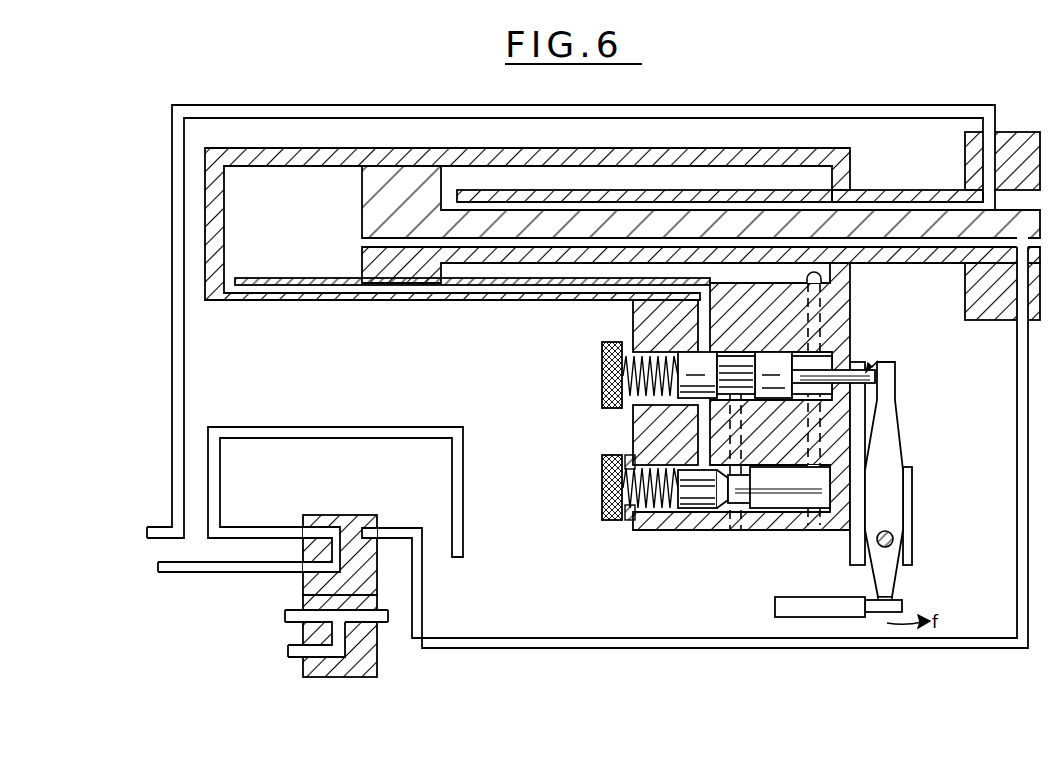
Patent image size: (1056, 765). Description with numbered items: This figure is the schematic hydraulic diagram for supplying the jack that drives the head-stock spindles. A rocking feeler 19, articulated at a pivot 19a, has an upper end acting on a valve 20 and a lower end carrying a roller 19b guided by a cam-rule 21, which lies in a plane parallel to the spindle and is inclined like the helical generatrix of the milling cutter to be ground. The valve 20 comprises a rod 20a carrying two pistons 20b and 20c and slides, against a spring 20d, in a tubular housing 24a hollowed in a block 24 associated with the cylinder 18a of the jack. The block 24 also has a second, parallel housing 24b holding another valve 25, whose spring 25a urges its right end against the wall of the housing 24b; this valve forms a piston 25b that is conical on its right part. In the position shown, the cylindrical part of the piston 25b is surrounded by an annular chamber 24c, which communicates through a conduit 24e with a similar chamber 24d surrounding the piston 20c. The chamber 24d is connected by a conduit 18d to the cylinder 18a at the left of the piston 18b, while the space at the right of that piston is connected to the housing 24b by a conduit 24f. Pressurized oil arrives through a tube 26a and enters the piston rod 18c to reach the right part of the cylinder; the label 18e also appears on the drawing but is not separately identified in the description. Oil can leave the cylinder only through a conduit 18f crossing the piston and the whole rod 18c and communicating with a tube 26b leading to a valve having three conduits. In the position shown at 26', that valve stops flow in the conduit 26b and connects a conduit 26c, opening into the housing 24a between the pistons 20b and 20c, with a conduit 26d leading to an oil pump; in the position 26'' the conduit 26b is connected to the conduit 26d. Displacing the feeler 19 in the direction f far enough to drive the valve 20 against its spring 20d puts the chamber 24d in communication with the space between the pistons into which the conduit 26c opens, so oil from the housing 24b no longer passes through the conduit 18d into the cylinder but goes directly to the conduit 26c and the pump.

The cylinder 18a is at (293, 158).
The piston 18b is at (405, 178).
The piston rod 18c is at (765, 198).
The conduit 18d is at (400, 287).
The housing right inner bar 18e is at (902, 206).
The conduit 18f is at (930, 247).
The rocking feeler 19 is at (888, 472).
The articulation 19a is at (893, 539).
The roller 19b is at (897, 608).
The valve 20 is at (895, 368).
The rod 20a is at (815, 377).
The piston 20b is at (783, 360).
The piston 20c is at (670, 392).
The spring 20d is at (602, 356).
The cam-rule 21 is at (810, 612).
The block 24 is at (652, 327).
The tubular housing 24a is at (858, 400).
The second housing 24b is at (792, 509).
The annular chamber 24c is at (702, 525).
The annular chamber 24d is at (712, 430).
The conduit 24e is at (705, 442).
The conduit 24f is at (820, 437).
The valve 25 is at (678, 513).
The spring 25a is at (638, 517).
The piston 25b is at (708, 494).
The tube 26a is at (178, 284).
The tube 26b is at (945, 645).
The conduit 26c is at (300, 433).
The conduit 26d is at (235, 565).
The valve position 26' is at (340, 537).
The valve position 26'' is at (358, 638).